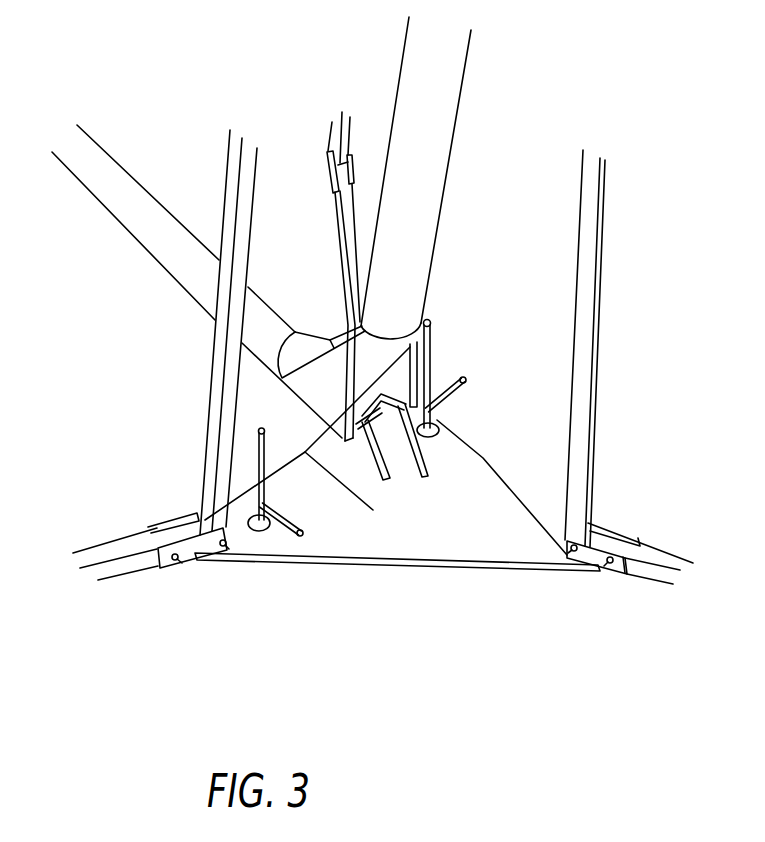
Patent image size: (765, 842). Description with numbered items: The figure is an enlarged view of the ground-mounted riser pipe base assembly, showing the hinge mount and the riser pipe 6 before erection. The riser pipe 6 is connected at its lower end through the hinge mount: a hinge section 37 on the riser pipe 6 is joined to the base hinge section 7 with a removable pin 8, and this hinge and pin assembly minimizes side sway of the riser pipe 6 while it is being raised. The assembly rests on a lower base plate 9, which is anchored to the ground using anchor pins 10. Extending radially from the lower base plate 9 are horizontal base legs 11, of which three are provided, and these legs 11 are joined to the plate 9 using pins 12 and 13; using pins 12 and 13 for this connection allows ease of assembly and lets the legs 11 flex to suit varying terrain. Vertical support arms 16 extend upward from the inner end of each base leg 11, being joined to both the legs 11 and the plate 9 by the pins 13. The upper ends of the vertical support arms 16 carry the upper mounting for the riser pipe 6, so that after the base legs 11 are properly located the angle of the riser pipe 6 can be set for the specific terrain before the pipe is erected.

The riser pipe 6 is at (166, 268).
The base hinge section 7 is at (363, 562).
The removable pin 8 is at (435, 415).
The lower base plate 9 is at (386, 451).
The anchor pins 10 is at (272, 570).
The horizontal base legs 11 is at (340, 252).
The pins 12 is at (177, 566).
The pins 13 is at (223, 566).
The vertical support arms 16 is at (342, 126).
The hinge section 37 is at (307, 410).